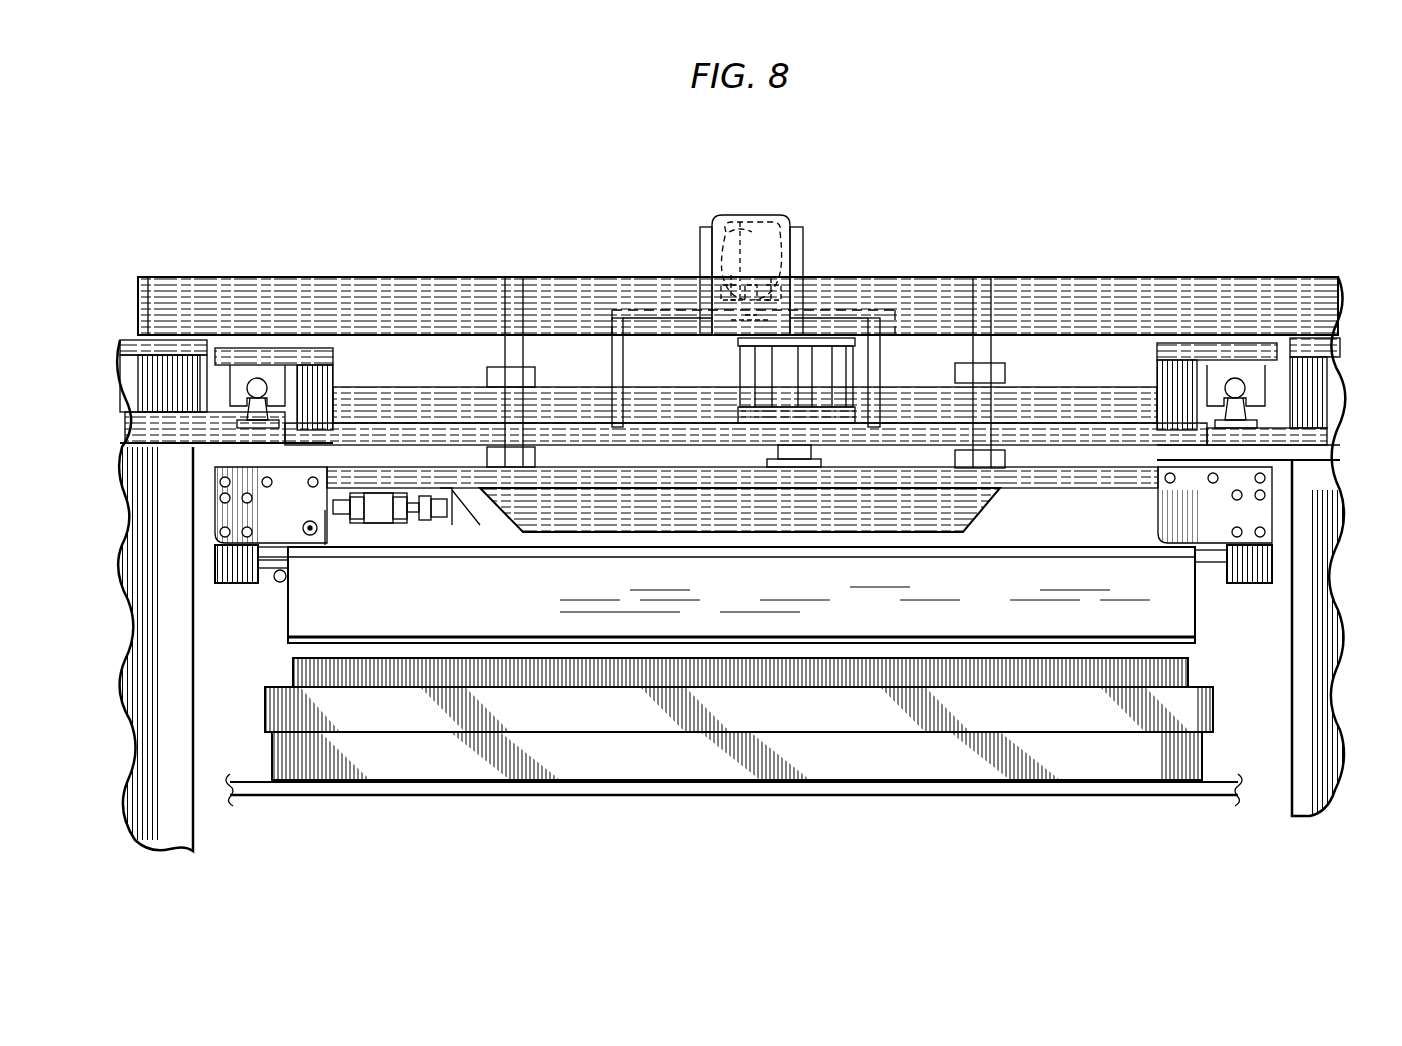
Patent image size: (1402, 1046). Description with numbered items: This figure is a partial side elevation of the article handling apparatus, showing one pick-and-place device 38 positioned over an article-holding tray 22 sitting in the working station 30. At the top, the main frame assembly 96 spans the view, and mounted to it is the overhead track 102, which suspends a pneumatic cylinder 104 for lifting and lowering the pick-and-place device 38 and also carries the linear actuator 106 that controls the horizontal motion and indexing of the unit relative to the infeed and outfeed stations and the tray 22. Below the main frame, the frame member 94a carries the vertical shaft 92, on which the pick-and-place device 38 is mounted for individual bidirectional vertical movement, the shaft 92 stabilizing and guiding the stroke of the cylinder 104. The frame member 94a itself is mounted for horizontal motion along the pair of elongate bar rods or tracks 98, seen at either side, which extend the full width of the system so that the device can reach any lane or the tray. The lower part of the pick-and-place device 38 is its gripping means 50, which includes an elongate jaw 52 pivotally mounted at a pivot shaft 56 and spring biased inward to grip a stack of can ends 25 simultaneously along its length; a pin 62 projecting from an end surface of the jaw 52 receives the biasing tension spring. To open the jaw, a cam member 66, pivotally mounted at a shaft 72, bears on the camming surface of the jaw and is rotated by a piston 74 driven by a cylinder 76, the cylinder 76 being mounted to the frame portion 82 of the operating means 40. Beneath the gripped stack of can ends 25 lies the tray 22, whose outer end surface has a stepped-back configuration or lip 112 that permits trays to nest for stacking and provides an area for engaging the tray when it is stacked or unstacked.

The article-holding tray 22 is at (612, 771).
The stack of can ends 25 is at (293, 665).
The working station 30 is at (660, 812).
The pick-and-place device 38 is at (284, 620).
The operating means 40 is at (496, 252).
The gripping means 50 is at (1200, 613).
The jaw 52 is at (792, 601).
The pivot shaft 56 is at (246, 556).
The pin 62 is at (280, 583).
The cam member 66 is at (333, 540).
The shaft 72 is at (330, 540).
The piston 74 is at (372, 541).
The cylinder 76 is at (395, 541).
The frame portion 82 is at (457, 496).
The vertical shaft 92 is at (521, 376).
The frame member 94a is at (416, 386).
The main frame assembly 96 is at (1101, 292).
The track 98 is at (250, 386).
The overhead track 102 is at (808, 241).
The pneumatic cylinder 104 is at (738, 372).
The linear actuator 106 is at (740, 262).
The stepped lip 112 is at (1213, 731).